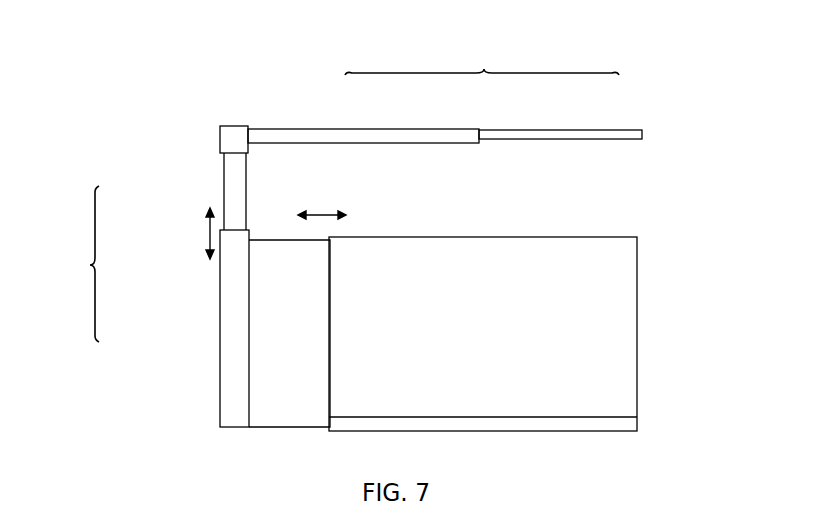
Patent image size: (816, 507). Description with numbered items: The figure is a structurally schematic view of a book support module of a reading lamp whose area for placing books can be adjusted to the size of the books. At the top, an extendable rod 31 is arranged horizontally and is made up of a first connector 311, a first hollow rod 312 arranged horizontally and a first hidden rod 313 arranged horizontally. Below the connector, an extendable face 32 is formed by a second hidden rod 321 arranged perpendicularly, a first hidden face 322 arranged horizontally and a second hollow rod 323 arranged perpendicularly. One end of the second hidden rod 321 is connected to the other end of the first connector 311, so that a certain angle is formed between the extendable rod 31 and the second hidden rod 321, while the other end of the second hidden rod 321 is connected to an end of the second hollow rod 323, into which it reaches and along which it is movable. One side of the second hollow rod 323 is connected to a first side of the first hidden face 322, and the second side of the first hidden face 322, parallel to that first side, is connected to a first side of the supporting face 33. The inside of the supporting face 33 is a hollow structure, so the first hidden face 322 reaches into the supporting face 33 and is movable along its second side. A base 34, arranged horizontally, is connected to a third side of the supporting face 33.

The extendable rod 31 is at (482, 59).
The first connector 311 is at (230, 139).
The first hollow rod 312 is at (375, 132).
The first hidden rod 313 is at (575, 138).
The extendable face 32 is at (77, 264).
The second hidden rod 321 is at (233, 205).
The first hidden face 322 is at (283, 377).
The second hollow rod 323 is at (233, 298).
The supporting face 33 is at (607, 346).
The base 34 is at (607, 424).